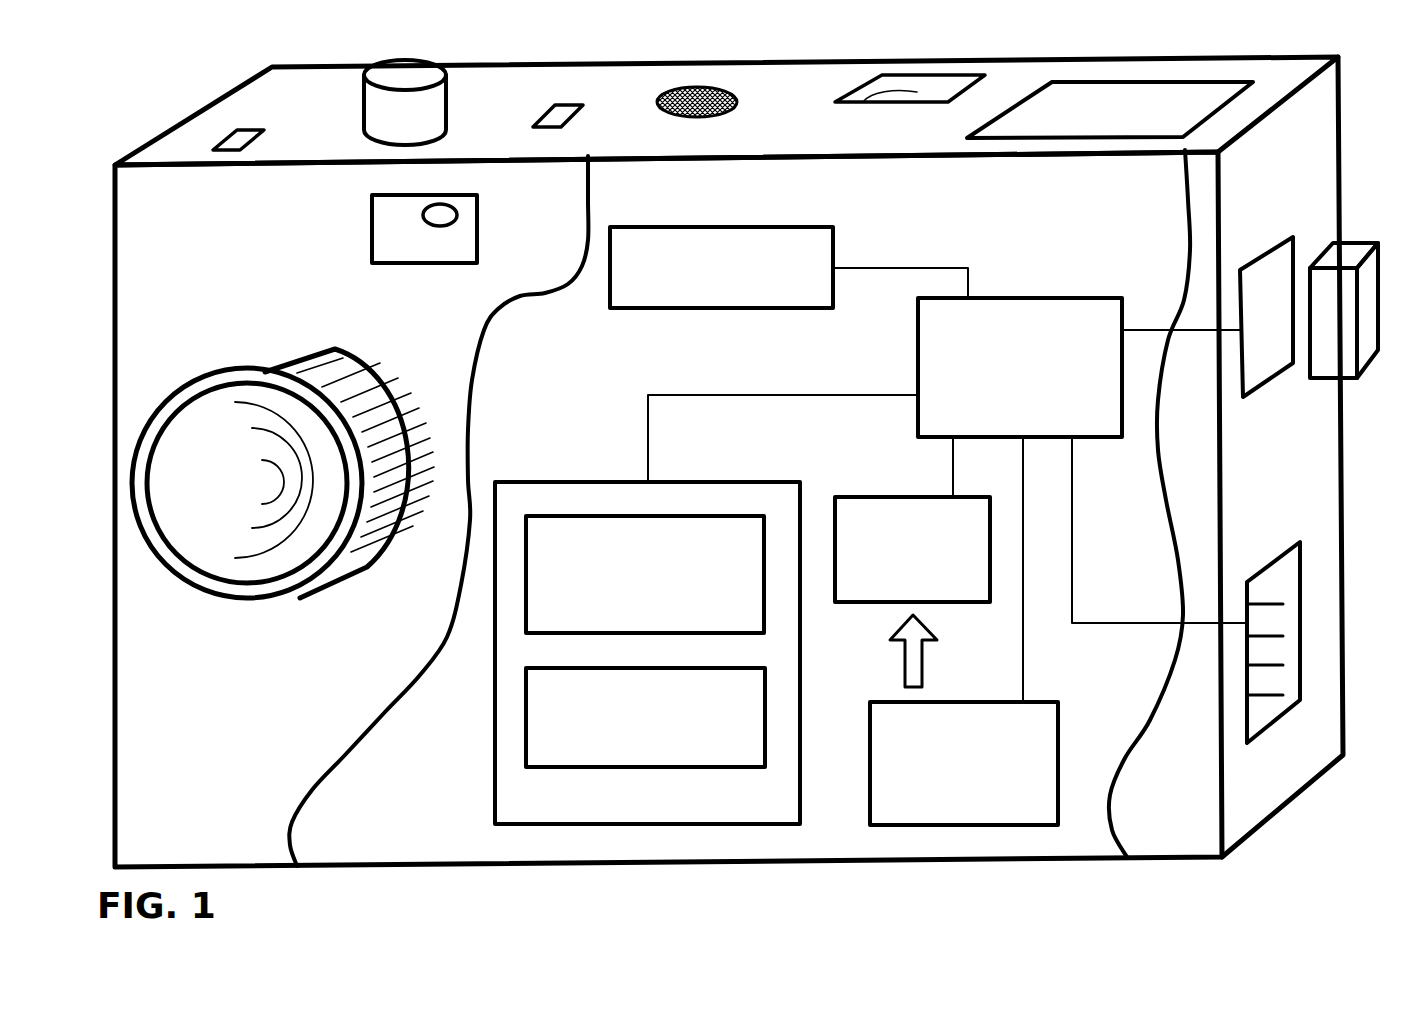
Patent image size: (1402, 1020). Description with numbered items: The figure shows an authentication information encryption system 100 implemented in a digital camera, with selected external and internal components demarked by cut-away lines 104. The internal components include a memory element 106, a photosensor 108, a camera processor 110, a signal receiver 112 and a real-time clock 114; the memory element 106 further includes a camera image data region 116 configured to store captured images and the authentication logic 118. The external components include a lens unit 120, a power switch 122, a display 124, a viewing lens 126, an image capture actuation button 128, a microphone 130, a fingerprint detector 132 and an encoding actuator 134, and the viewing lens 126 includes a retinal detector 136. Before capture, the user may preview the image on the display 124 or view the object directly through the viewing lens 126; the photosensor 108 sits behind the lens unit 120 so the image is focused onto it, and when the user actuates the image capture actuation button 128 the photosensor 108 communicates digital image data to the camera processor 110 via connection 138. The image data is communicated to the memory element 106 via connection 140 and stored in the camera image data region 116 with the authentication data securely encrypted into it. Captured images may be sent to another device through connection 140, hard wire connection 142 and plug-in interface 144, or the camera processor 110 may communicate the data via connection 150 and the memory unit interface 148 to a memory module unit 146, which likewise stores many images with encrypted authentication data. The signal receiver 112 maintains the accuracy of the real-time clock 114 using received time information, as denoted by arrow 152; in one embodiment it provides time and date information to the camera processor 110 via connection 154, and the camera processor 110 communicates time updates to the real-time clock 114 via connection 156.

The authentication information encryption system 100 is at (148, 845).
The cut-away lines 104 is at (508, 300).
The memory element 106 is at (748, 809).
The photosensor 108 is at (776, 300).
The camera processor 110 is at (1069, 426).
The signal receiver 112 is at (1006, 813).
The real-time clock 114 is at (936, 593).
The camera image data region 116 is at (714, 625).
The authentication logic 118 is at (714, 755).
The lens unit 120 is at (300, 346).
The power switch 122 is at (257, 137).
The display 124 is at (1133, 123).
The viewing lens 126 is at (428, 265).
The image capture actuation button 128 is at (450, 96).
The microphone 130 is at (735, 100).
The fingerprint detector 132 is at (865, 104).
The encoding actuator 134 is at (580, 115).
The retinal detector 136 is at (442, 212).
The connection 138 is at (930, 268).
The connection 140 is at (868, 394).
The hard wire connection 142 is at (1138, 628).
The plug-in interface 144 is at (1253, 573).
The memory module unit 146 is at (1328, 380).
The memory unit interface 148 is at (1258, 253).
The connection 150 is at (1148, 328).
The arrow 152 is at (902, 668).
The connection 154 is at (1020, 667).
The connection 156 is at (953, 468).